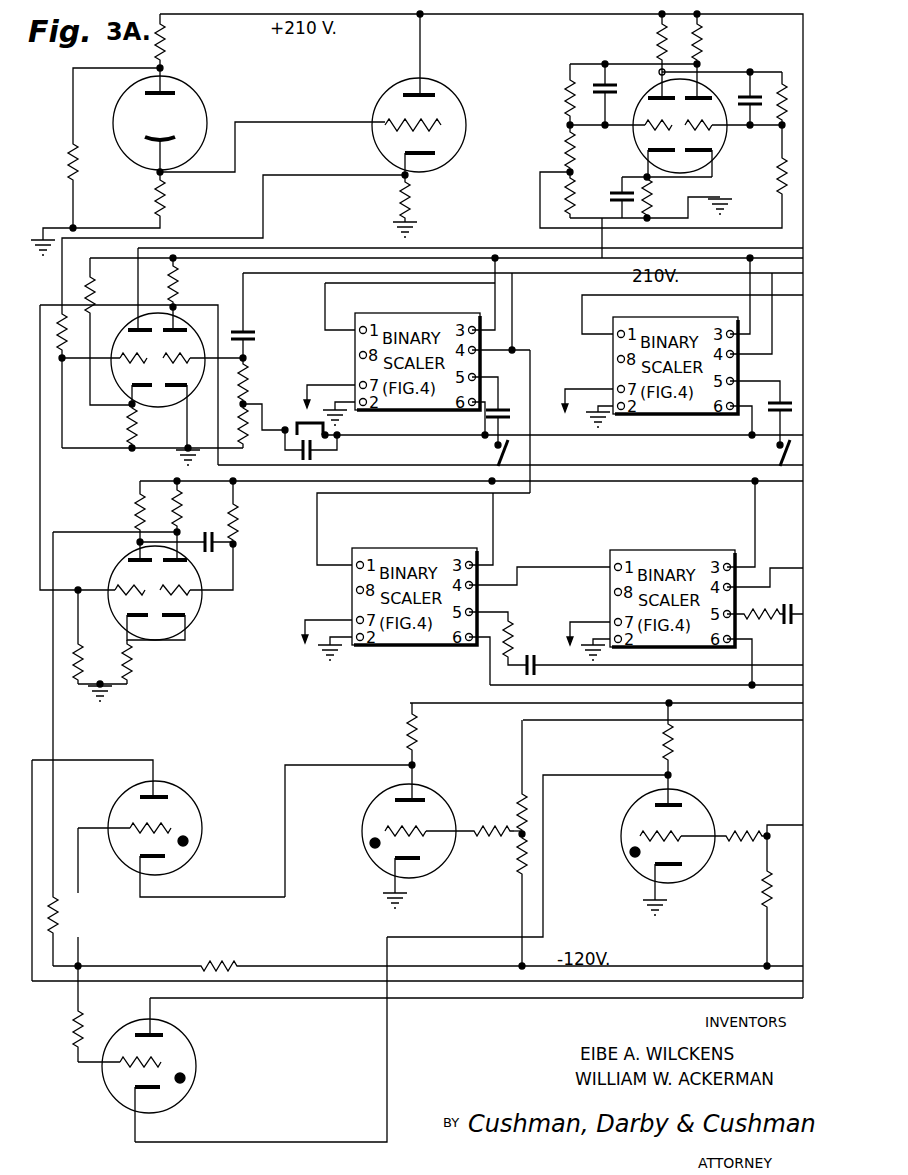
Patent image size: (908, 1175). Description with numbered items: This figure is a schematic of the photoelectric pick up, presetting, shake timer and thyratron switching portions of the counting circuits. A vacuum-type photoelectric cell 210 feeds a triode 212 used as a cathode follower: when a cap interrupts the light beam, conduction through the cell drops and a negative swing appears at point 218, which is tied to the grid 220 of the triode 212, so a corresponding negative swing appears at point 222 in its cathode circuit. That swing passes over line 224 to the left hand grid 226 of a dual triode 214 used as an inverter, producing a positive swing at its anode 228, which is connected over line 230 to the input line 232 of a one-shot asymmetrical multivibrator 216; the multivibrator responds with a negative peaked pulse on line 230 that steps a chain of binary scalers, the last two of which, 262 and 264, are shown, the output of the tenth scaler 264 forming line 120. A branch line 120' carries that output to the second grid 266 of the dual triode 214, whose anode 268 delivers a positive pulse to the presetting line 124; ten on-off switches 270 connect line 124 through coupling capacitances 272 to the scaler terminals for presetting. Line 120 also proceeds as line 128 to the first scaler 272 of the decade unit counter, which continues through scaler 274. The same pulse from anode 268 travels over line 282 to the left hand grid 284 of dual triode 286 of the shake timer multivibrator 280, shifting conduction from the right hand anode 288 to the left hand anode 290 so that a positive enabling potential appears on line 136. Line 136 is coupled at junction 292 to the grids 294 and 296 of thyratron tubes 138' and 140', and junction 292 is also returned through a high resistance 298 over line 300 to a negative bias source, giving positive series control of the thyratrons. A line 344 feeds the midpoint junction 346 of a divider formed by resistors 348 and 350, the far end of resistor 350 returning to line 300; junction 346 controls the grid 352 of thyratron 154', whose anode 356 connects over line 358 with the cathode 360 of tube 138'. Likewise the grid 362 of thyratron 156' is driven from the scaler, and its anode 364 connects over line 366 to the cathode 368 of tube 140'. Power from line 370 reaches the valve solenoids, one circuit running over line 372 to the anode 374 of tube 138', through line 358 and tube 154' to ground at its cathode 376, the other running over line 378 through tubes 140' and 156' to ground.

The vacuum-type photoelectric cell 210 is at (178, 80).
The triode 212 is at (410, 115).
The dual triode 214 is at (161, 380).
The asymmetrical multivibrator circuit 216 is at (632, 54).
The point in cathode circuit of photoelectric cell 218 is at (163, 178).
The grid of triode 220 is at (380, 122).
The point in cathode circuit of triode 222 is at (400, 179).
The line 224 is at (200, 238).
The left hand grid of dual triode 226 is at (118, 365).
The anode of dual triode 228 is at (134, 310).
The line 230 is at (320, 248).
The input line of multivibrator 232 is at (600, 240).
The presetting line 124 is at (222, 322).
The output line of binary scaler counting circuit 120 is at (518, 333).
The line to presetting circuit 120' is at (537, 311).
The line 128 is at (533, 352).
The binary scaling circuit 262 is at (681, 351).
The tenth binary scaling circuit 264 is at (355, 345).
The second grid of dual triode 266 is at (202, 382).
The anode of dual triode 268 is at (180, 322).
The on-off switches 270 is at (495, 447).
The coupling capacitances / binary scaler circuit 272 is at (370, 547).
The scaler circuit 274 is at (640, 550).
The asymmetrical multivibrator 280 is at (165, 591).
The line 282 is at (40, 472).
The left hand grid of dual triode 284 is at (105, 576).
The dual triode 286 is at (128, 552).
The right hand anode 288 is at (208, 550).
The left hand anode 290 is at (133, 587).
The line 136 is at (53, 733).
The thyratron tube 138' is at (180, 826).
The thyratron tube 154' is at (403, 838).
The thyratron tube 156' is at (679, 838).
The thyratron tube 140' is at (157, 1054).
The junction 292 is at (78, 962).
The grid of thyratron tube 138' 294 is at (118, 827).
The grid of thyratron tube 140' 296 is at (107, 1067).
The high resistance 298 is at (197, 963).
The line 300 is at (313, 967).
The line 344 is at (742, 727).
The midpoint junction 346 is at (515, 837).
The resistor 348 is at (518, 798).
The resistor 350 is at (520, 870).
The grid of thyratron tube 154' 352 is at (442, 830).
The anode of thyratron tube 154' 356 is at (413, 790).
The line 358 is at (285, 857).
The cathode of thyratron tube 138' 360 is at (170, 867).
The grid of thyratron tube 156' 362 is at (707, 833).
The anode of thyratron tube 156' 364 is at (670, 797).
The line 366 is at (622, 775).
The cathode of thyratron tube 140' 368 is at (158, 1095).
The line 370 is at (705, 707).
The line 372 is at (725, 965).
The anode of thyratron tube 138' 374 is at (160, 793).
The cathode of thyratron tube 154' 376 is at (418, 862).
The line 378 is at (550, 1000).